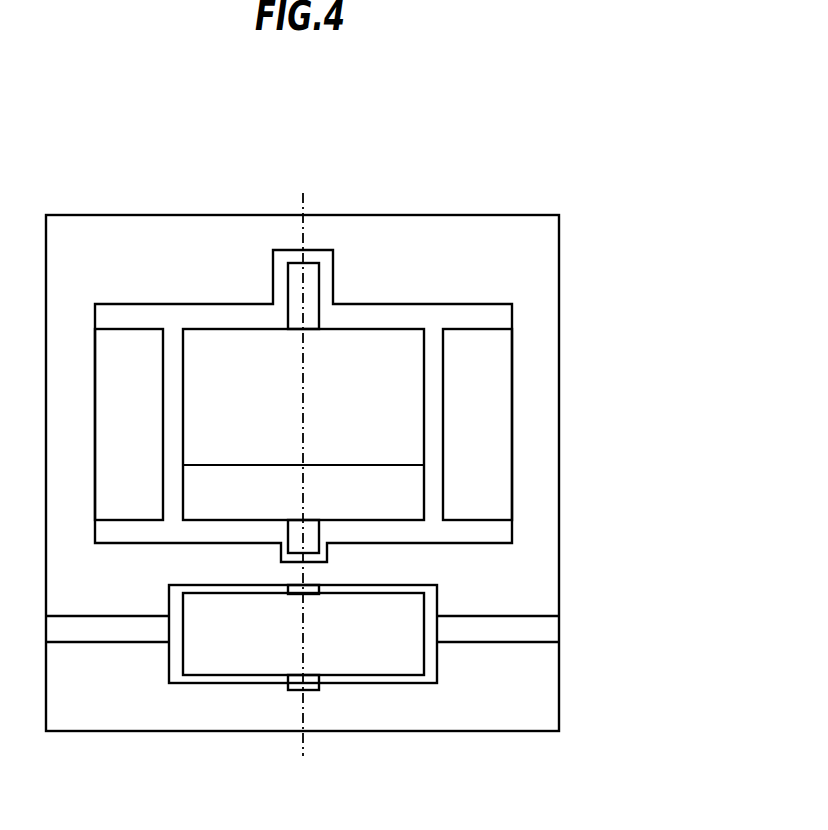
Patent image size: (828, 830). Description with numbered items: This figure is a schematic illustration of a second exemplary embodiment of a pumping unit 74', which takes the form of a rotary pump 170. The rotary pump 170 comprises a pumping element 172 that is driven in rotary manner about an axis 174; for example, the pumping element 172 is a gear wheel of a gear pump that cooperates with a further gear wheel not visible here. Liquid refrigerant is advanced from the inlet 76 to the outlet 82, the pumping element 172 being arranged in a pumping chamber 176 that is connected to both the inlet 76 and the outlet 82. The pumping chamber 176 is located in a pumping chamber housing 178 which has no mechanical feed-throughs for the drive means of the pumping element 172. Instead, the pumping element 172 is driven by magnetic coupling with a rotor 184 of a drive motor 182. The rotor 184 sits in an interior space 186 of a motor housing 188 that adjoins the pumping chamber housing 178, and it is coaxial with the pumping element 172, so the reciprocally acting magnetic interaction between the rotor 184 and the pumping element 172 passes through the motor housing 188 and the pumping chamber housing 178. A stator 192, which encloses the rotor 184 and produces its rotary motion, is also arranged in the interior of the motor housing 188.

The pumping unit 74' is at (375, 455).
The rotary pump 170 is at (572, 303).
The motor housing 188 is at (99, 255).
The axis 174 is at (304, 750).
The drive motor 182 is at (440, 296).
The interior space 186 is at (224, 308).
The rotor 184 is at (367, 367).
The stator 192 is at (480, 437).
The pumping element 172 is at (411, 653).
The pumping chamber 176 is at (231, 670).
The pumping chamber housing 178 is at (192, 707).
The outlet 82 is at (98, 628).
The inlet 76 is at (537, 628).